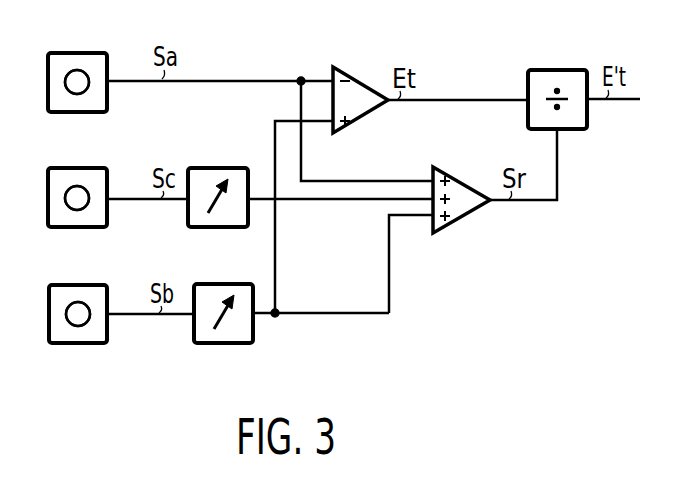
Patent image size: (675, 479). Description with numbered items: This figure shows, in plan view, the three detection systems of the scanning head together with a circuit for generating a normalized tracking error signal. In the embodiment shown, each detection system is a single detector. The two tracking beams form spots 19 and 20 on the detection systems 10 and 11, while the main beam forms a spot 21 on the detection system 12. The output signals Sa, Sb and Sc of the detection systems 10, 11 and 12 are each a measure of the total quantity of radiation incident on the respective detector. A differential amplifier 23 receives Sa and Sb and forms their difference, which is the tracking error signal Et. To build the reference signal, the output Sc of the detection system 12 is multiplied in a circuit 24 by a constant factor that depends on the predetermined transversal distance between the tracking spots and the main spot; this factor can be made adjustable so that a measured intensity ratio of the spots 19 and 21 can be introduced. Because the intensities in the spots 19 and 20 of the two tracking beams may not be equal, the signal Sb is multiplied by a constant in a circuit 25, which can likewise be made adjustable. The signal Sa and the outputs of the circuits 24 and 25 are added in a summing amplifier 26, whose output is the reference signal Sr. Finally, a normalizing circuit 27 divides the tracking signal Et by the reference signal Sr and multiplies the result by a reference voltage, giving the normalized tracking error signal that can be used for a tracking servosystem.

The detection system 10 is at (36, 97).
The detection system 11 is at (36, 329).
The detection system 12 is at (39, 214).
The spot 19 is at (79, 71).
The spot 20 is at (81, 303).
The spot 21 is at (80, 187).
The differential amplifier 23 is at (367, 128).
The circuit 24 is at (210, 229).
The circuit 25 is at (219, 345).
The summing amplifier 26 is at (455, 233).
The normalizing circuit 27 is at (578, 132).